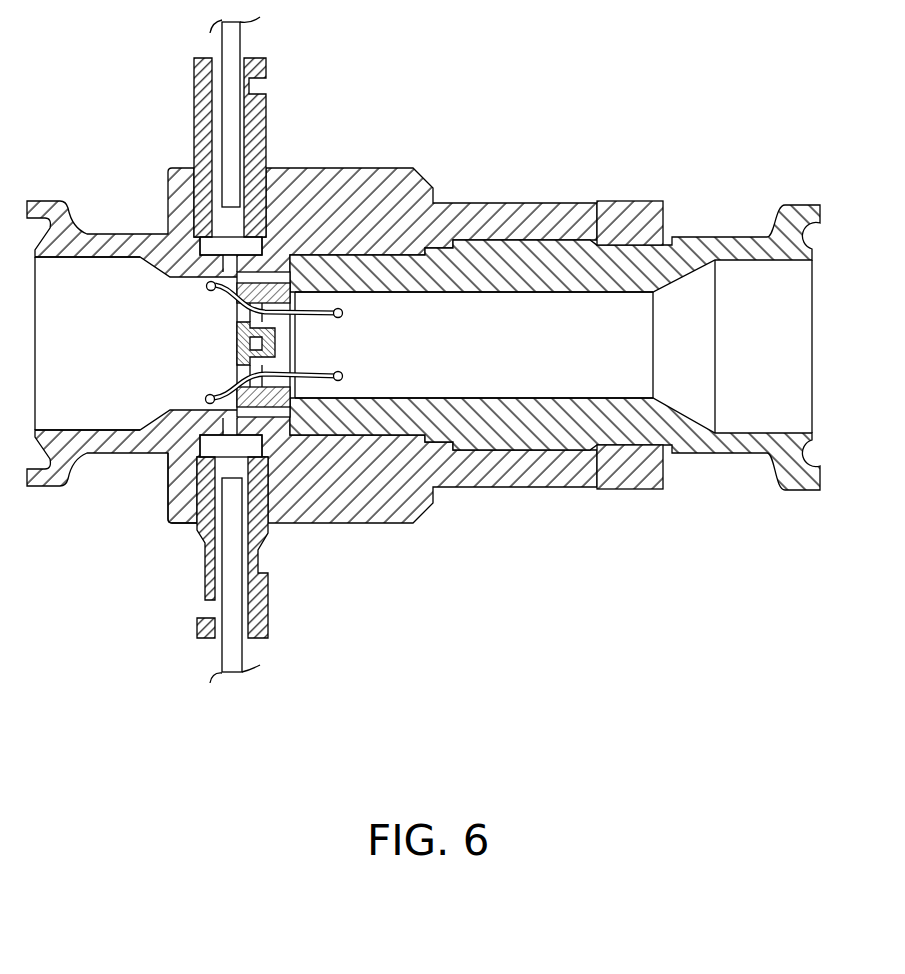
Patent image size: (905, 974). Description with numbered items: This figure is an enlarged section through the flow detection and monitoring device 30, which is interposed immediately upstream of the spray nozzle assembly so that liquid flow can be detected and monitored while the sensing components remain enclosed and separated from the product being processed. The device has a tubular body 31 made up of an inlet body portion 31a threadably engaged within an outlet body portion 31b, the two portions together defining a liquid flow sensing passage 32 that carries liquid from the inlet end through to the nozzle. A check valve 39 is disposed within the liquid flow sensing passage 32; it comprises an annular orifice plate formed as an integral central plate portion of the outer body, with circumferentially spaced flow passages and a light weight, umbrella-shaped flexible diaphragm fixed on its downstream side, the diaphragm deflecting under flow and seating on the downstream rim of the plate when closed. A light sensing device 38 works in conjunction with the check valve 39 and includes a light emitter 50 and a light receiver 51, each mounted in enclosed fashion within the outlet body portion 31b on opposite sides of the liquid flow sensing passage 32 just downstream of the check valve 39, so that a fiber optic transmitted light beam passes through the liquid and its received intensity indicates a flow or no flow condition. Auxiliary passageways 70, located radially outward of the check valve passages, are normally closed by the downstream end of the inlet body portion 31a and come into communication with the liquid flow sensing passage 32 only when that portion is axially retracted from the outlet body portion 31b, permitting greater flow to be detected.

The flow detection and monitoring device 30 is at (402, 167).
The tubular body 31 is at (400, 527).
The inlet body portion 31a is at (717, 453).
The outlet body portion 31b is at (172, 490).
The liquid flow sensing passage 32 is at (72, 257).
The light sensing device 38 is at (211, 136).
The check valve 39 is at (280, 390).
The light emitter 50 is at (233, 163).
The light receiver 51 is at (233, 555).
The auxiliary passageways 70 is at (267, 277).